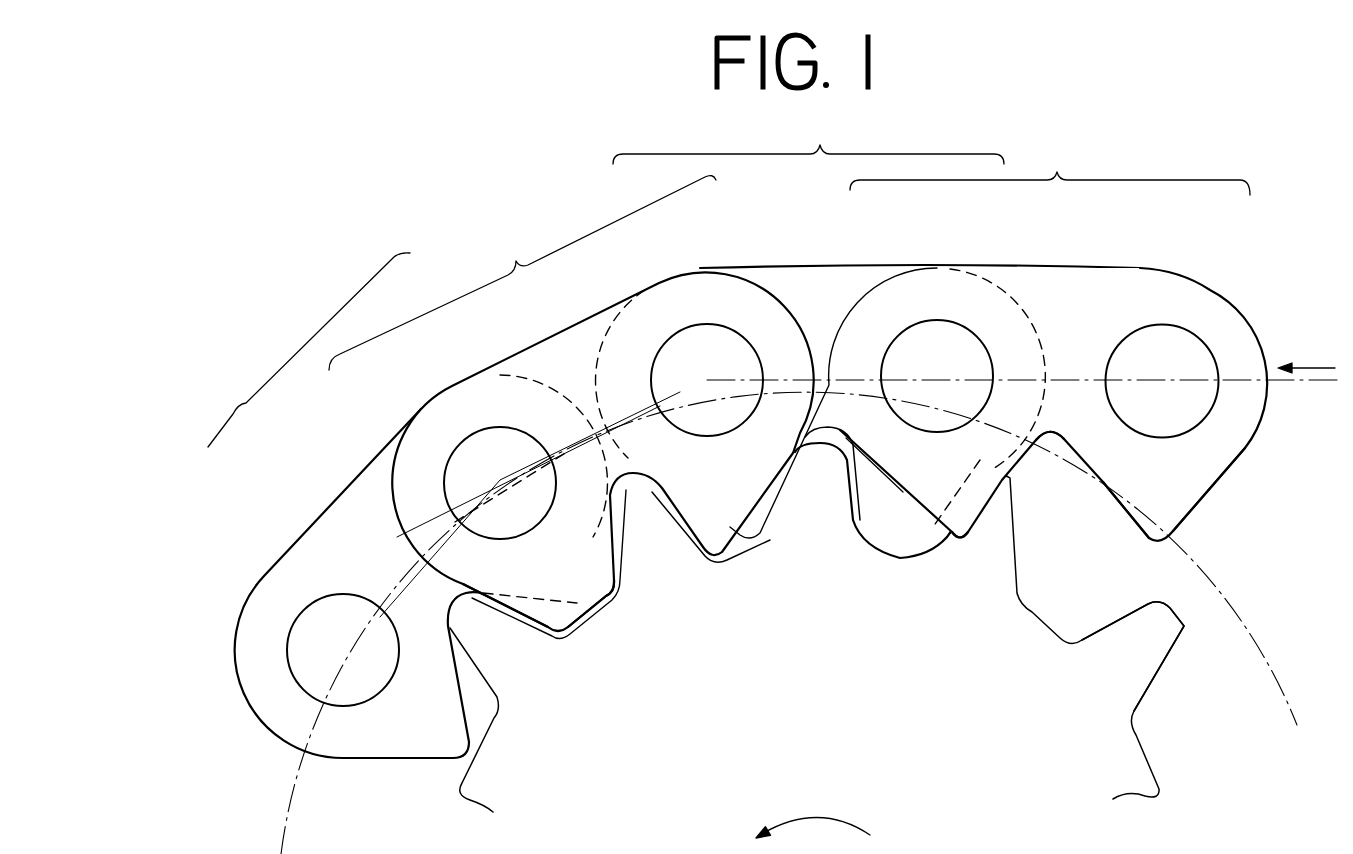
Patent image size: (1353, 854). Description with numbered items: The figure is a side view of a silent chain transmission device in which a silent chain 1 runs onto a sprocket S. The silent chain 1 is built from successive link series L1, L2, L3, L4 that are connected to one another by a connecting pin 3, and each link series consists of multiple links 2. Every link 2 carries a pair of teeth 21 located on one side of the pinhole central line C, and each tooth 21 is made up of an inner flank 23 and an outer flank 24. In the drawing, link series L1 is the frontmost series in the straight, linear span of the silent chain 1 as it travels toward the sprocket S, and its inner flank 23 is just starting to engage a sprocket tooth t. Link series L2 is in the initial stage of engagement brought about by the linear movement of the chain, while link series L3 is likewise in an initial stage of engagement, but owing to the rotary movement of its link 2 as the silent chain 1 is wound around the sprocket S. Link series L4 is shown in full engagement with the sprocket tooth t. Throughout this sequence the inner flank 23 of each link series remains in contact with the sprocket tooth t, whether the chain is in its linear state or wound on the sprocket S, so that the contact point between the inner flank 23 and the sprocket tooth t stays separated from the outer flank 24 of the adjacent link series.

The silent chain 1 is at (505, 197).
The link 2 is at (1250, 290).
The connecting pin 3 is at (934, 342).
The tooth 21 is at (955, 538).
The inner flank 23 is at (562, 603).
The outer flank 24 is at (535, 618).
The sprocket S is at (1141, 775).
The sprocket tooth t is at (1152, 658).
The pinhole central line C is at (1312, 384).
The link series L1 is at (1050, 169).
The link series L2 is at (808, 141).
The link series L3 is at (522, 273).
The link series L4 is at (309, 350).